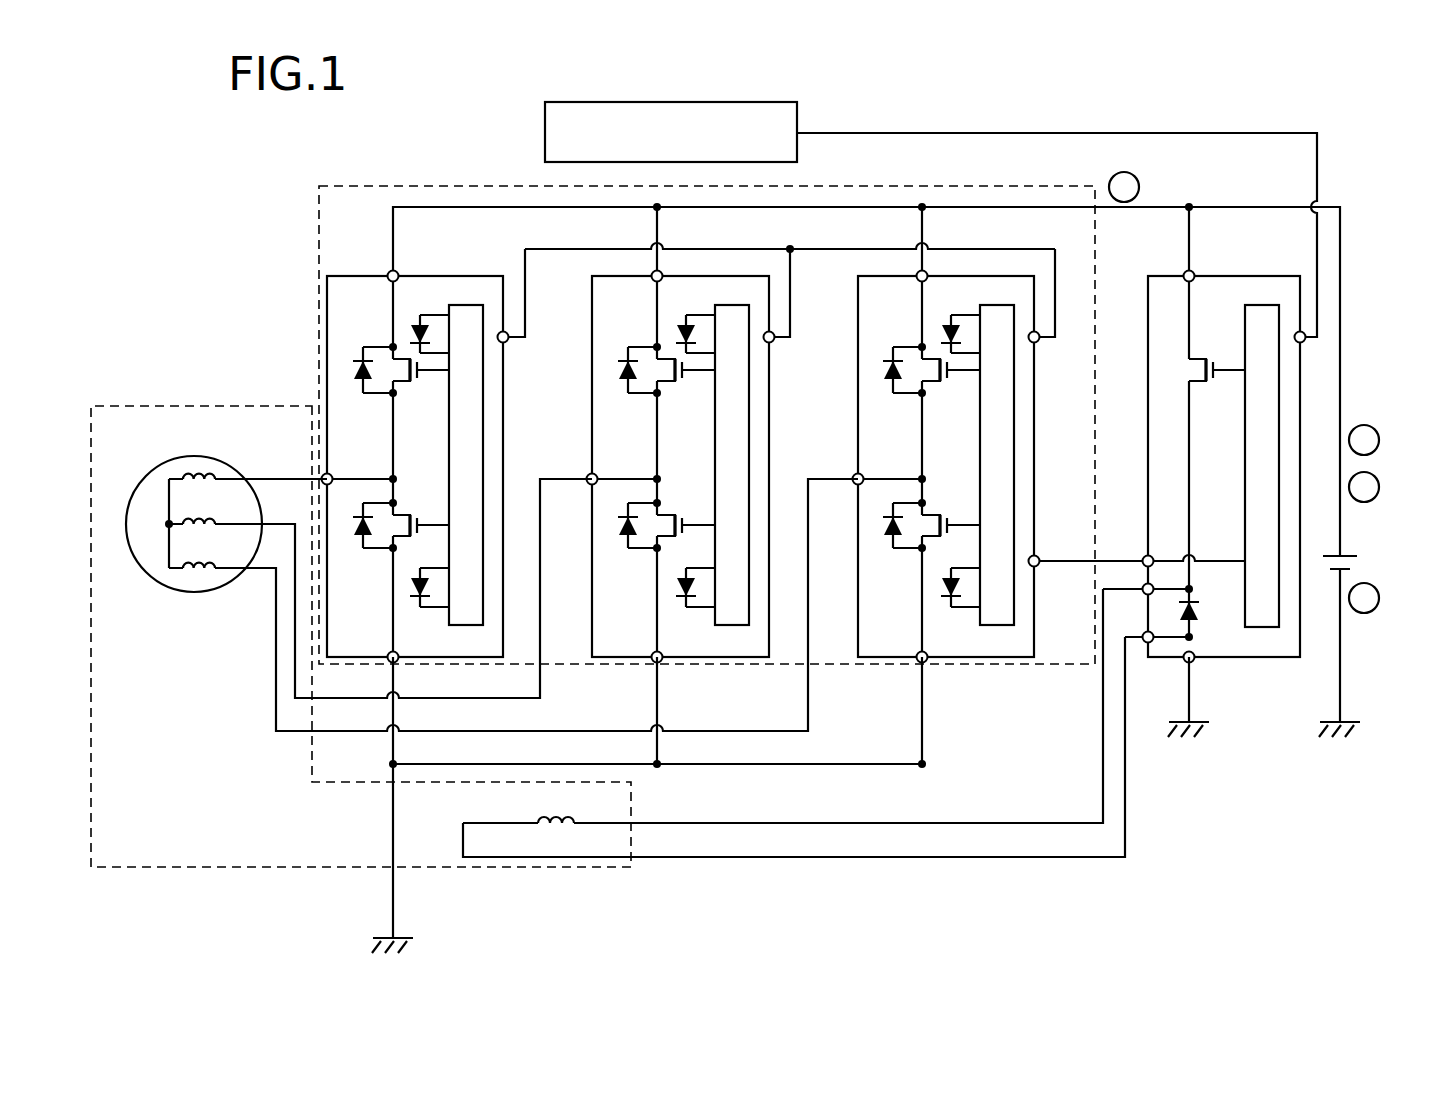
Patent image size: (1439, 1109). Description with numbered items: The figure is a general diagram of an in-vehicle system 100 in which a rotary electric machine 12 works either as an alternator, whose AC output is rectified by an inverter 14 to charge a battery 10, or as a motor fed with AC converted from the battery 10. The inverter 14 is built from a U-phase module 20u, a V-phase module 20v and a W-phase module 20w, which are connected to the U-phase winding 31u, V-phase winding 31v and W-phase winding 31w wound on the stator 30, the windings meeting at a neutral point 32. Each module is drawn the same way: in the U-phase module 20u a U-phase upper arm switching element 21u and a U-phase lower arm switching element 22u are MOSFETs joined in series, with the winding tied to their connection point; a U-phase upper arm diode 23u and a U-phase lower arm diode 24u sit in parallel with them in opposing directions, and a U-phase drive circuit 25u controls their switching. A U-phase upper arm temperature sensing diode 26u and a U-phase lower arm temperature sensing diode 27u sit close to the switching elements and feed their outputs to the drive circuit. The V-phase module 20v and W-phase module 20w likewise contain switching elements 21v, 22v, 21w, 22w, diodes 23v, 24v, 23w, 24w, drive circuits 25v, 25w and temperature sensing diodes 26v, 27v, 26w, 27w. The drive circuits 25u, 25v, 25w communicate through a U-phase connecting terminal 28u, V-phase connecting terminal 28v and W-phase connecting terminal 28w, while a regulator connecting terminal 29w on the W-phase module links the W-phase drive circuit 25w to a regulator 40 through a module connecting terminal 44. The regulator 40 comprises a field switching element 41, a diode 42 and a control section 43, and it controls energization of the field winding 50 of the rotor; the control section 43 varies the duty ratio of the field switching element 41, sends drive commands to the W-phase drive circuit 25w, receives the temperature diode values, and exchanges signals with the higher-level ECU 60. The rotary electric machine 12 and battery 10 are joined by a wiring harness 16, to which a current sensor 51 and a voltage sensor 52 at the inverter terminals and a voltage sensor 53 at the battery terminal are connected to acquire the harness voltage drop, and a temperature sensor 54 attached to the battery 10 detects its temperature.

The in-vehicle system 100 is at (1316, 103).
The battery 10 is at (1346, 556).
The rotary electric machine 12 is at (283, 406).
The inverter 14 is at (1076, 180).
The wiring harness 16 is at (1260, 207).
The U-phase module 20u is at (360, 276).
The V-phase module 20v is at (613, 273).
The W-phase module 20w is at (879, 273).
The U-phase upper arm switching element 21u is at (424, 384).
The V-phase upper arm switching element 21v is at (689, 384).
The W-phase upper arm switching element 21w is at (954, 384).
The U-phase lower arm switching element 22u is at (417, 517).
The V-phase lower arm switching element 22v is at (682, 517).
The W-phase lower arm switching element 22w is at (947, 517).
The U-phase upper arm diode 23u is at (354, 362).
The V-phase upper arm diode 23v is at (619, 362).
The W-phase upper arm diode 23w is at (884, 362).
The U-phase lower arm diode 24u is at (350, 530).
The V-phase lower arm diode 24v is at (615, 530).
The W-phase lower arm diode 24w is at (880, 530).
The U-phase drive circuit 25u is at (466, 305).
The V-phase drive circuit 25v is at (733, 305).
The W-phase drive circuit 25w is at (998, 305).
The U-phase upper arm temperature sensing diode 26u is at (418, 322).
The V-phase upper arm temperature sensing diode 26v is at (684, 322).
The W-phase upper arm temperature sensing diode 26w is at (949, 322).
The U-phase lower arm temperature sensing diode 27u is at (418, 600).
The V-phase lower arm temperature sensing diode 27v is at (684, 600).
The W-phase lower arm temperature sensing diode 27w is at (949, 600).
The U-phase connecting terminal 28u is at (508, 342).
The V-phase connecting terminal 28v is at (774, 342).
The W-phase connecting terminal 28w is at (1039, 342).
The regulator connecting terminal 29w is at (1039, 566).
The stator 30 is at (192, 457).
The U-phase winding 31u is at (218, 478).
The V-phase winding 31v is at (224, 509).
The W-phase winding 31w is at (192, 575).
The neutral point 32 is at (168, 524).
The regulator 40 is at (1228, 276).
The field switching element 41 is at (1214, 384).
The diode 42 is at (1200, 607).
The control section 43 is at (1263, 305).
The module connecting terminal 44 is at (1144, 558).
The field winding 50 is at (566, 822).
The current sensor 51 is at (1379, 487).
The voltage sensor 52 is at (1139, 188).
The voltage sensor 53 is at (1379, 440).
The temperature sensor 54 is at (1379, 598).
The ECU 60 is at (706, 103).